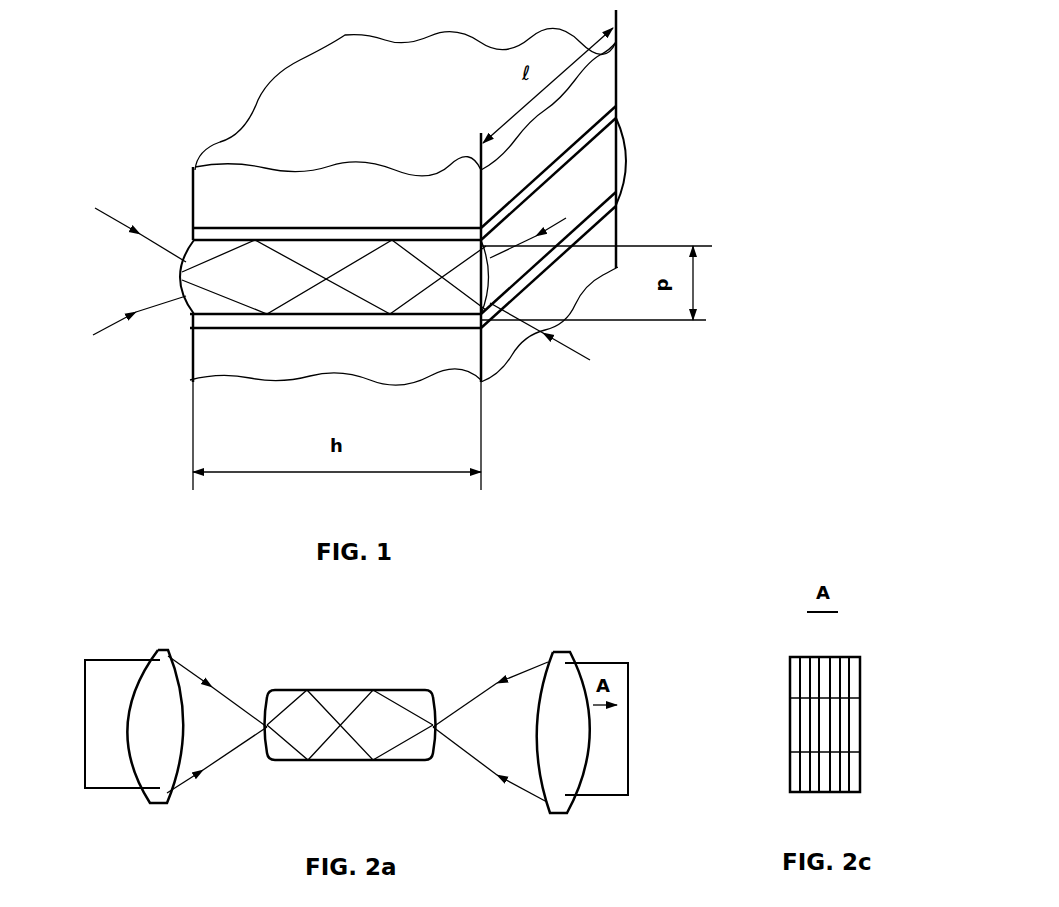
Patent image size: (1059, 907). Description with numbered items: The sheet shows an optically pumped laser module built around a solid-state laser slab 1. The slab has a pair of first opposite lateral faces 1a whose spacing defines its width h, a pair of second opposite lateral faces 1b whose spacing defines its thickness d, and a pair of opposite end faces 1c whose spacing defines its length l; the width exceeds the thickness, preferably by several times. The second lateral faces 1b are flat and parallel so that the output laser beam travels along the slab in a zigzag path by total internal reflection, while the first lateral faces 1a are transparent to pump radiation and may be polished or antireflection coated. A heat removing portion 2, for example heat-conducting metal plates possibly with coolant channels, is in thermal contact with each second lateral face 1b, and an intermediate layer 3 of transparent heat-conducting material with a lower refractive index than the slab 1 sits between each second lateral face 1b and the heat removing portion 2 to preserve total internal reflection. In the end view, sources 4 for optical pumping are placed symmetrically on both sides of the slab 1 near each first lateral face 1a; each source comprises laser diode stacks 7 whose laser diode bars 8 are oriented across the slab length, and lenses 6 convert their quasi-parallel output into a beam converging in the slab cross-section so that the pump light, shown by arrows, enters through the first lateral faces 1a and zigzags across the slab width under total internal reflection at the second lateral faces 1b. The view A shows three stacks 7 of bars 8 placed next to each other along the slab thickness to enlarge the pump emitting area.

In FIG. 1, the solid-state laser slab 1 is at (607, 168).
In FIG. 1, the first lateral faces 1a is at (608, 155).
In FIG. 2a, the first lateral faces 1a is at (267, 705).
In FIG. 1, the second lateral faces 1b is at (275, 238).
In FIG. 2a, the second lateral faces 1b is at (330, 690).
In FIG. 1, the end faces 1c is at (200, 300).
In FIG. 1, the heat removing portion 2 is at (607, 75).
In FIG. 1, the intermediate layer 3 is at (618, 110).
In FIG. 2a, the sources for optical pumping 4 is at (150, 643).
In FIG. 2a, the lenses 6 is at (152, 800).
In FIG. 2a, the laser diode stacks 7 is at (83, 690).
In FIG. 2c, the laser diode stacks 7 is at (785, 760).
In FIG. 2c, the laser diode bars 8 is at (853, 682).